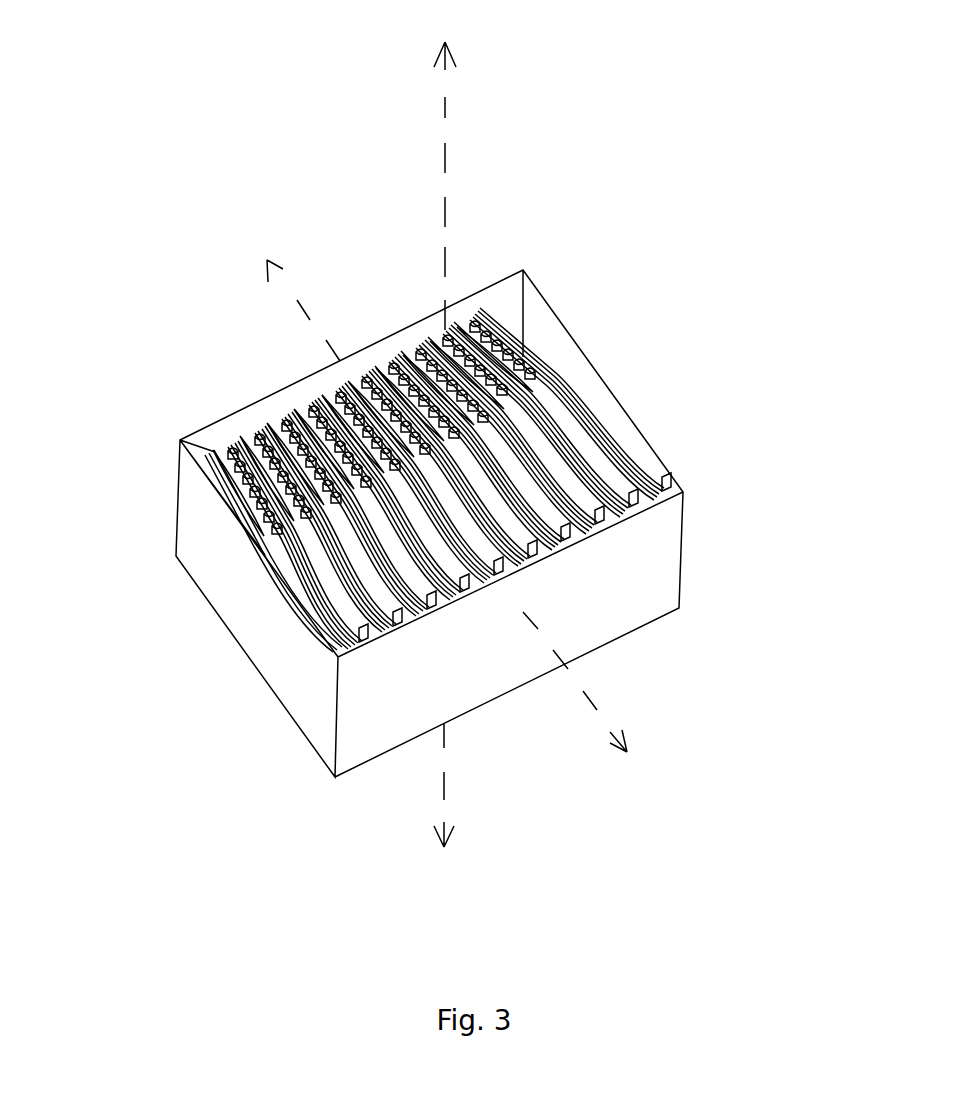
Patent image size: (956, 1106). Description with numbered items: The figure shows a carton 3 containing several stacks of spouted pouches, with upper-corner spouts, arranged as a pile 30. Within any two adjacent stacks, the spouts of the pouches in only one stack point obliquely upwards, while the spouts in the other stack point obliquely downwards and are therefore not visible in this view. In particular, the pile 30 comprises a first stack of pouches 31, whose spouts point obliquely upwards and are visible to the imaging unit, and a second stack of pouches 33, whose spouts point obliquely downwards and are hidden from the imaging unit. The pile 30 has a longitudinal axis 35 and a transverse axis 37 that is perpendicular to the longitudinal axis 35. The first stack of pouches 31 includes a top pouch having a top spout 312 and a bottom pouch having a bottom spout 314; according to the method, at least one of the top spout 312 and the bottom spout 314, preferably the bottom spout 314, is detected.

The carton 3 is at (614, 217).
The pile 30 is at (180, 440).
The first stack of pouches 31 is at (513, 350).
The top spout 312 is at (436, 312).
The bottom spout 314 is at (537, 393).
The second stack of pouches 33 is at (603, 473).
The longitudinal axis 35 is at (592, 698).
The transverse axis 37 is at (445, 108).